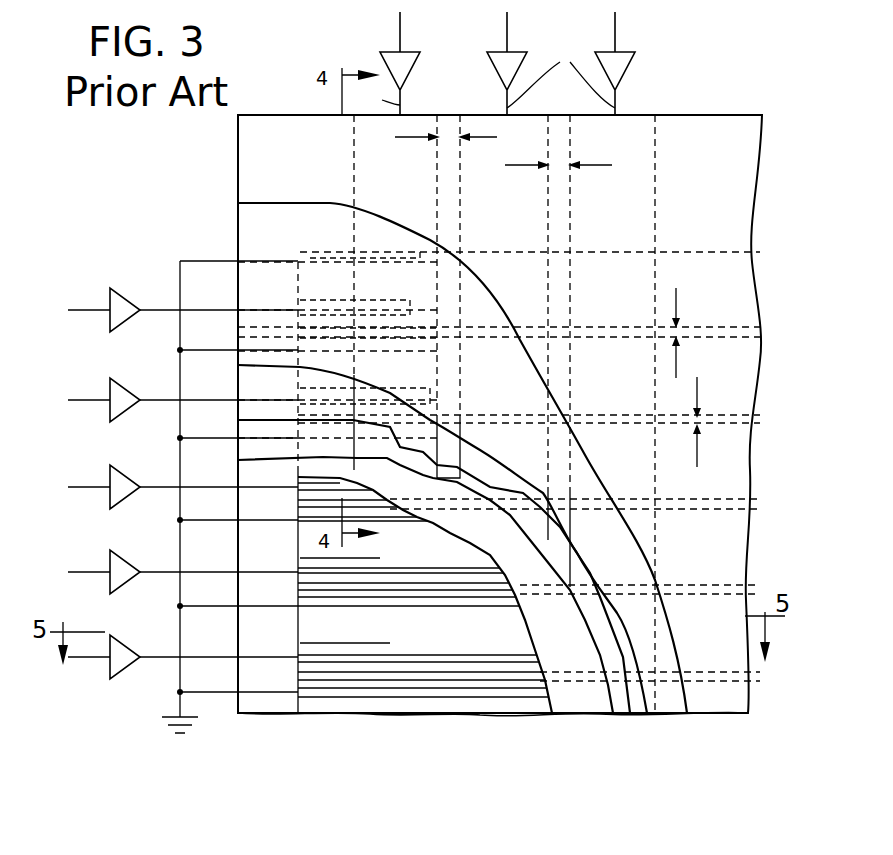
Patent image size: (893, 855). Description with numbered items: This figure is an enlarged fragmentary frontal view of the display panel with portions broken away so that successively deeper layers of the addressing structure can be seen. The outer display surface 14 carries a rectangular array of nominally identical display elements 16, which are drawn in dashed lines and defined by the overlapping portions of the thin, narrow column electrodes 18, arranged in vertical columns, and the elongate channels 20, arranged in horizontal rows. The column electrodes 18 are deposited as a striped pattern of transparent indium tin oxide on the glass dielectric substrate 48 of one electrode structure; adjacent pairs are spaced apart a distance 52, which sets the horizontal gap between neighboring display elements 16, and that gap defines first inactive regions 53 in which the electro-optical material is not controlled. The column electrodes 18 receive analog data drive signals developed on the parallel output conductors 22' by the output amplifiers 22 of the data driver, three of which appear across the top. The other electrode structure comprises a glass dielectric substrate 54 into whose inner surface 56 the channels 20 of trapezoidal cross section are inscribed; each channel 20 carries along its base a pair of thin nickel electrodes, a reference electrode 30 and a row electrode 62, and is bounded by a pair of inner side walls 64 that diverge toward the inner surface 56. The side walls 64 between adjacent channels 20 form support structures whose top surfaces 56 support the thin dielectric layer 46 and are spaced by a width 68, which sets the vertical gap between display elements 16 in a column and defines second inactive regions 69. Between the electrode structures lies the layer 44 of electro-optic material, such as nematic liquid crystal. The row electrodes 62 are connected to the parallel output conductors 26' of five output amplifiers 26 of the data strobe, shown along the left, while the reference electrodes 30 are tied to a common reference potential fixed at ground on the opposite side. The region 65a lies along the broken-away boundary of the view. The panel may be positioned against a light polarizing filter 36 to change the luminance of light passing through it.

The display surface 14 is at (250, 146).
The light polarizing filter 36 is at (250, 176).
The glass dielectric substrate 48 is at (258, 218).
The display elements 16 is at (412, 235).
The column electrodes 18 is at (425, 115).
The output amplifiers 22 is at (522, 62).
The output conductors 22' is at (481, 74).
The first inactive regions 53 is at (450, 115).
The distance 52 is at (447, 142).
The channels 20 is at (760, 302).
The second inactive regions 69 is at (792, 302).
The inner surface 56 is at (733, 330).
The width 68 is at (680, 336).
The output amplifiers 26 is at (101, 476).
The output conductors 26' is at (218, 497).
The layer of electro-optic material 44 is at (250, 376).
The thin layer of dielectric material 46 is at (250, 461).
The glass dielectric substrate 54 is at (240, 500).
The reference electrodes 30 is at (410, 272).
The boundary contour 65a is at (340, 481).
The row electrodes 62 is at (310, 310).
The inner side walls 64 is at (322, 250).